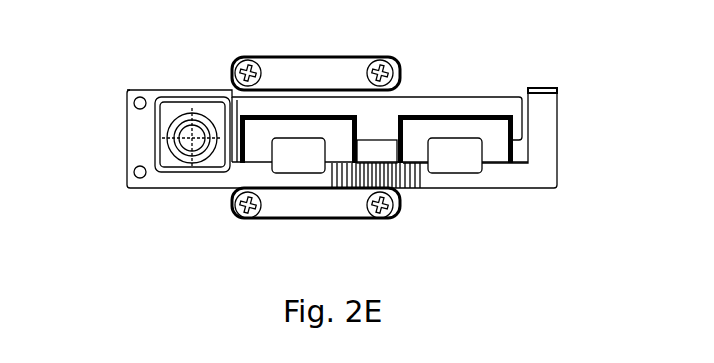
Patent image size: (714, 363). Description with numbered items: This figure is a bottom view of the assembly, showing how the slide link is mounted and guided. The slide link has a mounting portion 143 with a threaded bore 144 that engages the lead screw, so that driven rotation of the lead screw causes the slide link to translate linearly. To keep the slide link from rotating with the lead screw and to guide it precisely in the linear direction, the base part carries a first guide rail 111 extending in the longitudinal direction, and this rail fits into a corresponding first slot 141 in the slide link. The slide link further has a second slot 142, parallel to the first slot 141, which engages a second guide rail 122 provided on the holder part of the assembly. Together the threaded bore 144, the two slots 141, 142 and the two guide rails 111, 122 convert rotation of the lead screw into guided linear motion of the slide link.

The first guide rail 111 is at (293, 153).
The second guide rail 122 is at (457, 153).
The first slot 141 is at (263, 130).
The second slot 142 is at (490, 130).
The mounting portion 143 is at (177, 108).
The threaded bore 144 is at (170, 125).